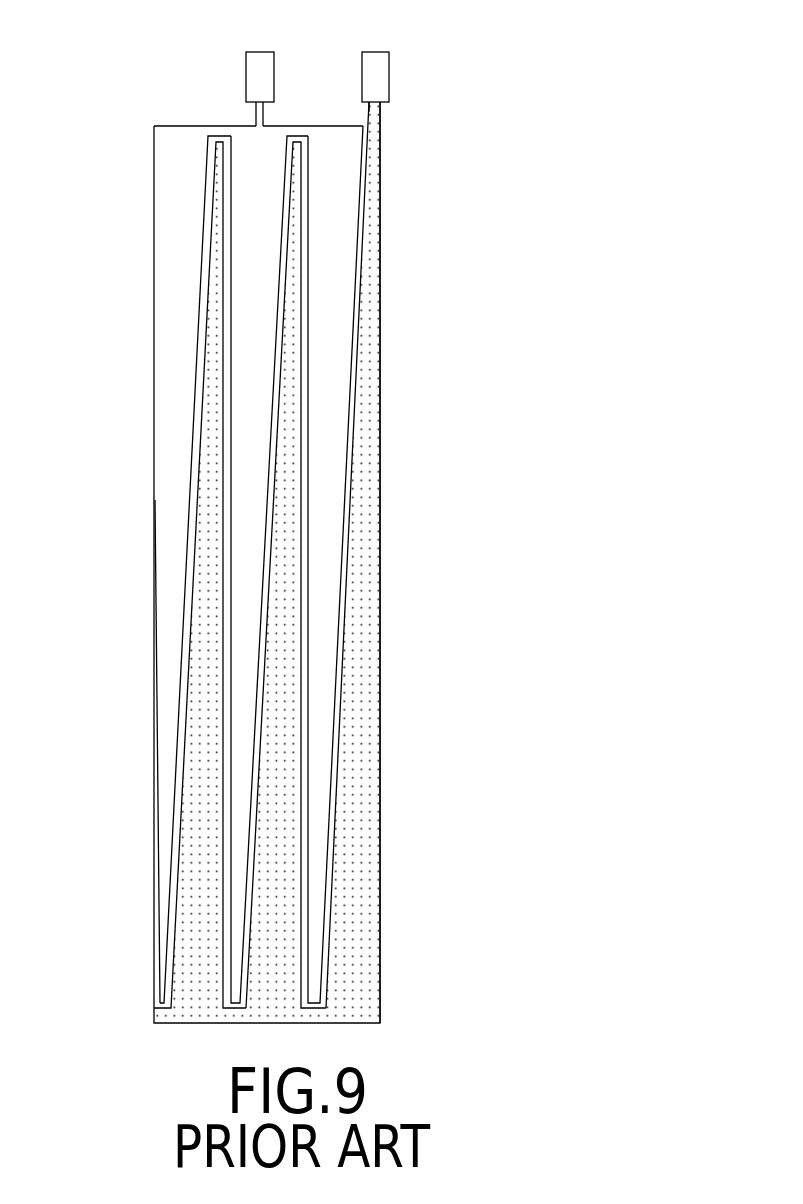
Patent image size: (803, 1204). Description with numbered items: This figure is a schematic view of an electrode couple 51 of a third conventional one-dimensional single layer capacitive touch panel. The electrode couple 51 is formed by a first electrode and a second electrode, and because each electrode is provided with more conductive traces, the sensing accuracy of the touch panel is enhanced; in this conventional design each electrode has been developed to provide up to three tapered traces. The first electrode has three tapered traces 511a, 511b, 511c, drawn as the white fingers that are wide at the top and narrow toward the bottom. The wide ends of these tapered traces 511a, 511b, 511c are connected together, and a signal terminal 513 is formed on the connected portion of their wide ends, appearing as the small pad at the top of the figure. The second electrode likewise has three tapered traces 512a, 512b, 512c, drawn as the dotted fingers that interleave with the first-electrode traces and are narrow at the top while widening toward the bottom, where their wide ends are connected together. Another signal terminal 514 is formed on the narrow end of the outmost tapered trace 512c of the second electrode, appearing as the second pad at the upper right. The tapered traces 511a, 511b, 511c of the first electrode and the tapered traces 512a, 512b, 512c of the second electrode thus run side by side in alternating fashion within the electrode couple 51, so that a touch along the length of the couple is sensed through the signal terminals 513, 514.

The electrode couple 51 is at (137, 110).
The tapered trace of the first electrode 511a is at (155, 285).
The tapered trace of the first electrode 511b is at (248, 440).
The tapered trace of the first electrode 511c is at (335, 365).
The tapered trace of the second electrode 512a is at (197, 845).
The tapered trace of the second electrode 512b is at (288, 808).
The outmost tapered trace of the second electrode 512c is at (367, 653).
The signal terminal 513 is at (247, 72).
The signal terminal 514 is at (389, 73).